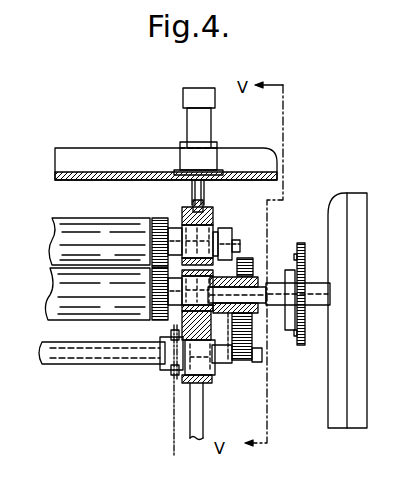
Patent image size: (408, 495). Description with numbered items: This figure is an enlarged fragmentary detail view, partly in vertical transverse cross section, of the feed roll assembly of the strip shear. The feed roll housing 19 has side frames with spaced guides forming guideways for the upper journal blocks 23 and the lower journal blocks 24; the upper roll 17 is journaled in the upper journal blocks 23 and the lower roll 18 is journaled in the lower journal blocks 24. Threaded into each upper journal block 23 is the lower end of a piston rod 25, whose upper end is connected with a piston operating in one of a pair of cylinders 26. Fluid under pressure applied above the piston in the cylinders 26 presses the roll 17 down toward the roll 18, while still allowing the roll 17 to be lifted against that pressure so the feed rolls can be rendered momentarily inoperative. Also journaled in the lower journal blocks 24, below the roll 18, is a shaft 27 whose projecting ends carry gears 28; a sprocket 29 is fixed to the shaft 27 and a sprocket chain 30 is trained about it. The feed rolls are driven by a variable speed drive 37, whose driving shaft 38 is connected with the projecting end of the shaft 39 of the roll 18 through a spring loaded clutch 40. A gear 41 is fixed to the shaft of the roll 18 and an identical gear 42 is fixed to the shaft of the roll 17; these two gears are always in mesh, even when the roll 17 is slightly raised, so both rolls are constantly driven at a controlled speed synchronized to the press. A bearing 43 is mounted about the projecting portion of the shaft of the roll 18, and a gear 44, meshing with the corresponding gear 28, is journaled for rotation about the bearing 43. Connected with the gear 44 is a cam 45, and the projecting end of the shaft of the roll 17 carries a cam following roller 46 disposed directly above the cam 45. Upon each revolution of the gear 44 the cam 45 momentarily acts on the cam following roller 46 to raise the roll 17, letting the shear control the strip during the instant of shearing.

The roll 17 is at (74, 226).
The roll 18 is at (90, 302).
The feed roll housing 19 is at (97, 148).
The upper journal blocks 23 is at (184, 206).
The lower journal blocks 24 is at (190, 388).
The piston rod 25 is at (206, 184).
The cylinders 26 is at (187, 120).
The shaft 27 is at (95, 362).
The gears 28 is at (252, 367).
The sprocket 29 is at (171, 374).
The sprocket chain 30 is at (174, 432).
The variable speed drive 37 is at (352, 230).
The driving shaft 38 is at (330, 297).
The shaft 39 is at (262, 303).
The spring loaded clutch 40 is at (305, 331).
The gear 41 is at (156, 323).
The gear 42 is at (154, 217).
The bearing 43 is at (253, 276).
The gear 44 is at (250, 260).
The cam 45 is at (223, 327).
The cam following roller 46 is at (226, 230).